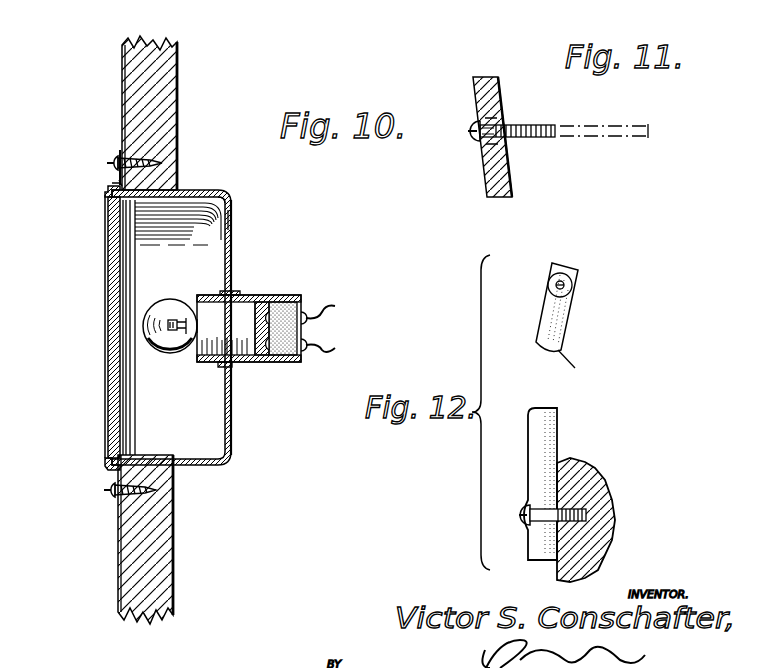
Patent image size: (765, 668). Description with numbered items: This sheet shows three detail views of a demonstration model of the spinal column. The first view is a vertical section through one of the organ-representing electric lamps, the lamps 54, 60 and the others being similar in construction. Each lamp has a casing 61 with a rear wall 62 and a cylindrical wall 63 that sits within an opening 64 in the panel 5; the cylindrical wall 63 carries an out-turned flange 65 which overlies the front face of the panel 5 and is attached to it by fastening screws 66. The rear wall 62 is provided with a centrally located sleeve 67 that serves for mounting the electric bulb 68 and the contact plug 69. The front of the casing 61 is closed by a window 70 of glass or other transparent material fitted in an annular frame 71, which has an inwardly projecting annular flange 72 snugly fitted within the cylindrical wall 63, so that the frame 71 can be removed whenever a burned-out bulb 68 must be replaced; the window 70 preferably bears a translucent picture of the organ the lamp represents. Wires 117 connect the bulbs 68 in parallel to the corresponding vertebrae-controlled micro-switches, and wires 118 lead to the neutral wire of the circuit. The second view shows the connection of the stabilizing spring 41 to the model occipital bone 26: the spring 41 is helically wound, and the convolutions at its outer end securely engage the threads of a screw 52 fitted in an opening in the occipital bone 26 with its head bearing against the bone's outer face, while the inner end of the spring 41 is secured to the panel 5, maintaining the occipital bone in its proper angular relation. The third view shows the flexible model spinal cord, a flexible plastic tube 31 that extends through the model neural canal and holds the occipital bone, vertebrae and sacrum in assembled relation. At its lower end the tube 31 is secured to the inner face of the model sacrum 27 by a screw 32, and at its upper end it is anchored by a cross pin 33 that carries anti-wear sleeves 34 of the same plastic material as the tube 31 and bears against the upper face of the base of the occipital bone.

In FIG. 10, the panel 5 is at (145, 78).
In FIG. 11, the wall panel 26 is at (500, 86).
In FIG. 12, the model sacrum 27 is at (603, 490).
In FIG. 12, the flexible tube 31 is at (557, 412).
In FIG. 12, the screw 32 is at (570, 507).
In FIG. 12, the cross pin 33 is at (578, 275).
In FIG. 12, the anti-wear sleeves 34 is at (572, 290).
In FIG. 11, the spring 41 is at (538, 142).
In FIG. 11, the screw 52 is at (473, 143).
In FIG. 10, the lamp 54 is at (74, 327).
In FIG. 10, the lamp 60 is at (82, 238).
In FIG. 10, the casing 61 is at (231, 198).
In FIG. 10, the rear wall 62 is at (232, 222).
In FIG. 10, the cylindrical wall 63 is at (204, 197).
In FIG. 10, the opening 64 is at (180, 188).
In FIG. 10, the out-turned flange 65 is at (119, 150).
In FIG. 10, the fastening screws 66 is at (108, 160).
In FIG. 10, the sleeve 67 is at (259, 297).
In FIG. 10, the electric bulb 68 is at (171, 300).
In FIG. 10, the contact plug 69 is at (287, 312).
In FIG. 10, the window 70 is at (115, 272).
In FIG. 10, the annular frame 71 is at (108, 190).
In FIG. 10, the annular flange 72 is at (135, 445).
In FIG. 10, the wires 117 is at (343, 306).
In FIG. 10, the wires 118 is at (342, 345).